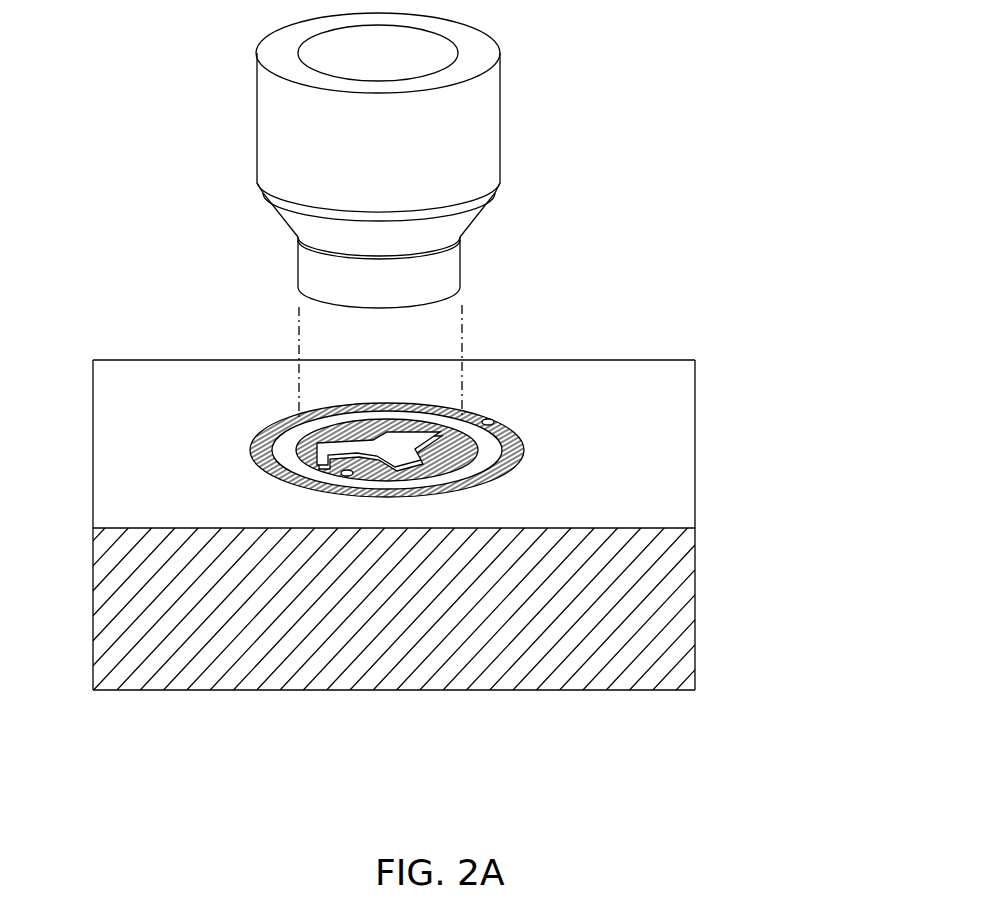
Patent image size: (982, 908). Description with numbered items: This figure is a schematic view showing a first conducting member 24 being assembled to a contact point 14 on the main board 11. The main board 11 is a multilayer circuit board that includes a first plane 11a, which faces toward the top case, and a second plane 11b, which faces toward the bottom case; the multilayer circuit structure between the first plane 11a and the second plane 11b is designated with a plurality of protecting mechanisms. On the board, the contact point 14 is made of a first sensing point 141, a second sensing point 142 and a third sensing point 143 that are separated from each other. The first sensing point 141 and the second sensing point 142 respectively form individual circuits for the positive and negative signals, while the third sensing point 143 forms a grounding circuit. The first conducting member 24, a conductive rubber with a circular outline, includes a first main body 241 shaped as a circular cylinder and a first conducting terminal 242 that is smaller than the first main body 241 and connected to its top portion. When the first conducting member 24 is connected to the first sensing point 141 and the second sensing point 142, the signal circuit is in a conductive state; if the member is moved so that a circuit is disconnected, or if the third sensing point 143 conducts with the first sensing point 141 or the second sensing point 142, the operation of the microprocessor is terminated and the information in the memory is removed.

The main board 11 is at (677, 622).
The first plane 11a is at (647, 690).
The second plane 11b is at (643, 458).
The contact point 14 is at (286, 366).
The first sensing point 141 is at (300, 431).
The second sensing point 142 is at (352, 430).
The third sensing point 143 is at (262, 452).
The first conducting member 24 is at (465, 160).
The first main body 241 is at (467, 155).
The first conducting terminal 242 is at (461, 272).